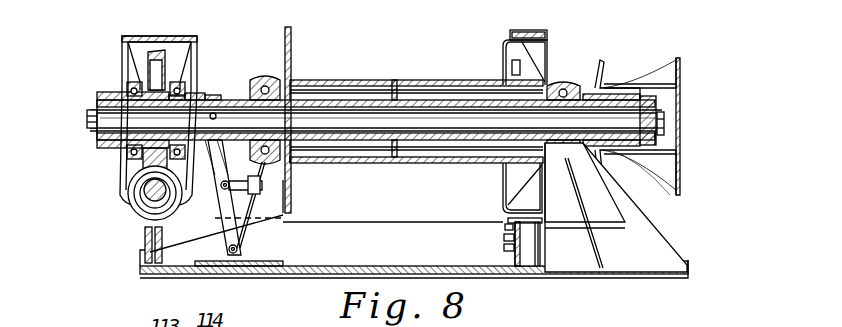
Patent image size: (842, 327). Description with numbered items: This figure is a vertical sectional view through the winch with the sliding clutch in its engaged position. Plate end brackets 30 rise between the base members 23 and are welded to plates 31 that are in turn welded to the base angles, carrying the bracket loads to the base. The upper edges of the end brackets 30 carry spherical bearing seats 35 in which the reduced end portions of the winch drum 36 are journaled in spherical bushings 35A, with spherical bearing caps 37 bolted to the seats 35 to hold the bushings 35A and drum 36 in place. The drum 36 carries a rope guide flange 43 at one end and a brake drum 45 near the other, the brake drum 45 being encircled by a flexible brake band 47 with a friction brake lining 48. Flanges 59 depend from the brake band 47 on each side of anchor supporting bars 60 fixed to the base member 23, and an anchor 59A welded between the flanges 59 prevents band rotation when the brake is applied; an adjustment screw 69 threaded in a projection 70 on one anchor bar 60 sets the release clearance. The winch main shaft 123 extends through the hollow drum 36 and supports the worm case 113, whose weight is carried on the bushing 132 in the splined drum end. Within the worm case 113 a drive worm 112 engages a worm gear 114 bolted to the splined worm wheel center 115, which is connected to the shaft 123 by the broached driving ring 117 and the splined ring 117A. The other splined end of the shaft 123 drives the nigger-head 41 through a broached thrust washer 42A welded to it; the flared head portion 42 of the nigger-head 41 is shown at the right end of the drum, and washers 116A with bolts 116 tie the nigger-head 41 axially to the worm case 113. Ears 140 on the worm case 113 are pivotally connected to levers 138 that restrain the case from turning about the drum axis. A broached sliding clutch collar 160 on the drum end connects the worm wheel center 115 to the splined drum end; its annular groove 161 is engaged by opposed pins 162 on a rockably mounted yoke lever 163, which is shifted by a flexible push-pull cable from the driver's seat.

The base members 23 is at (400, 226).
The plate end brackets 30 is at (600, 222).
The plates 31 is at (195, 258).
The spherical bearing seats 35 is at (292, 192).
The spherical bushings 35A is at (298, 82).
The winch drum 36 is at (396, 80).
The spherical bearing caps 37 is at (262, 82).
The nigger-head 41 is at (640, 86).
The fender lower 42 is at (628, 165).
The broached thrust washer 42A is at (656, 104).
The rope guide flange 43 is at (292, 44).
The brake drum 45 is at (503, 60).
The brake band 47 is at (548, 32).
The friction brake lining 48 is at (512, 31).
The flanges 59 is at (545, 230).
The anchor 59A is at (508, 222).
The anchor supporting bars 60 is at (520, 266).
The adjustment screw 69 is at (504, 250).
The projection 70 is at (504, 238).
The drive worm 112 is at (146, 198).
The worm case 113 is at (137, 42).
The worm gear 114 is at (160, 54).
The worm wheel center 115 is at (153, 78).
The bolts 116 is at (90, 120).
The washers 116A is at (118, 132).
The broached driving ring 117 is at (100, 92).
The ring 117A is at (96, 106).
The winch main shaft 123 is at (390, 125).
The bushing 132 is at (140, 172).
The levers 138 is at (148, 262).
The ears 140 is at (144, 236).
The sliding clutch collar 160 is at (203, 94).
The annular groove 161 is at (218, 96).
The pins 162 is at (230, 112).
The yoke lever 163 is at (216, 197).